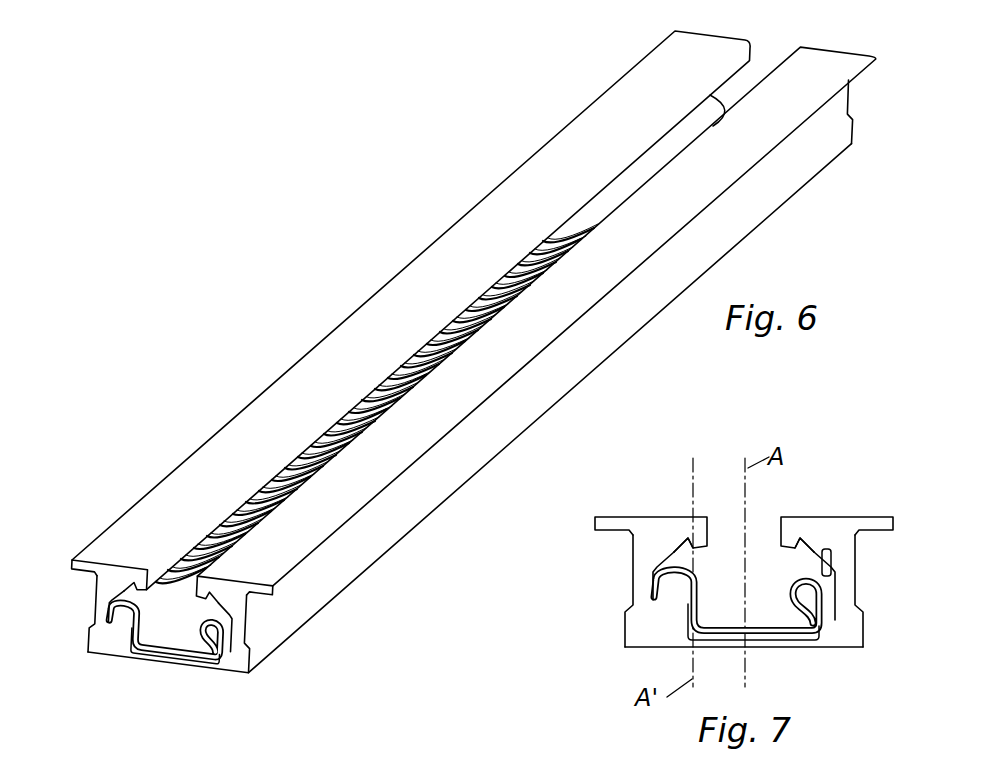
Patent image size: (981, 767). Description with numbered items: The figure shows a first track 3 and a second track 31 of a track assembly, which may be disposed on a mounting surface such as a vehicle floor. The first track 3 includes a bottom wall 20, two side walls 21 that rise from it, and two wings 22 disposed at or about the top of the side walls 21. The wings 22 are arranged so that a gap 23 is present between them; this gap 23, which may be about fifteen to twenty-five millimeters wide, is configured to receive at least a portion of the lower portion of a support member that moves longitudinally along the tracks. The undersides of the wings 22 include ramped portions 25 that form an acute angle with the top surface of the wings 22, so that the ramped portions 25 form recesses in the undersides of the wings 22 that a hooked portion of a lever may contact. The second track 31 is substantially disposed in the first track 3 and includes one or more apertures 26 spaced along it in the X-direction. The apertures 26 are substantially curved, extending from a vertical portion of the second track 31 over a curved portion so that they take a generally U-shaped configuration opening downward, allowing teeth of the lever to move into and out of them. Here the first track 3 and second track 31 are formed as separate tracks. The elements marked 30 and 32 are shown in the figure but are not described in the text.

In FIG. 6, the first track 3 is at (449, 366).
In FIG. 6, the bottom wall 20 is at (164, 665).
In FIG. 7, the bottom wall 20 is at (788, 643).
In FIG. 6, the side walls 21 is at (97, 606).
In FIG. 7, the side walls 21 is at (650, 557).
In FIG. 6, the wings 22 is at (110, 578).
In FIG. 7, the wings 22 is at (642, 520).
In FIG. 6, the gap 23 is at (752, 75).
In FIG. 7, the gap 23 is at (733, 515).
In FIG. 7, the ramped portions 25 is at (694, 551).
In FIG. 6, the apertures 26 is at (390, 370).
In FIG. 7, the apertures 26 is at (690, 572).
In FIG. 6, the spring element 30 is at (198, 642).
In FIG. 6, the second track 31 is at (147, 634).
In FIG. 7, the retaining tab 32 is at (655, 584).